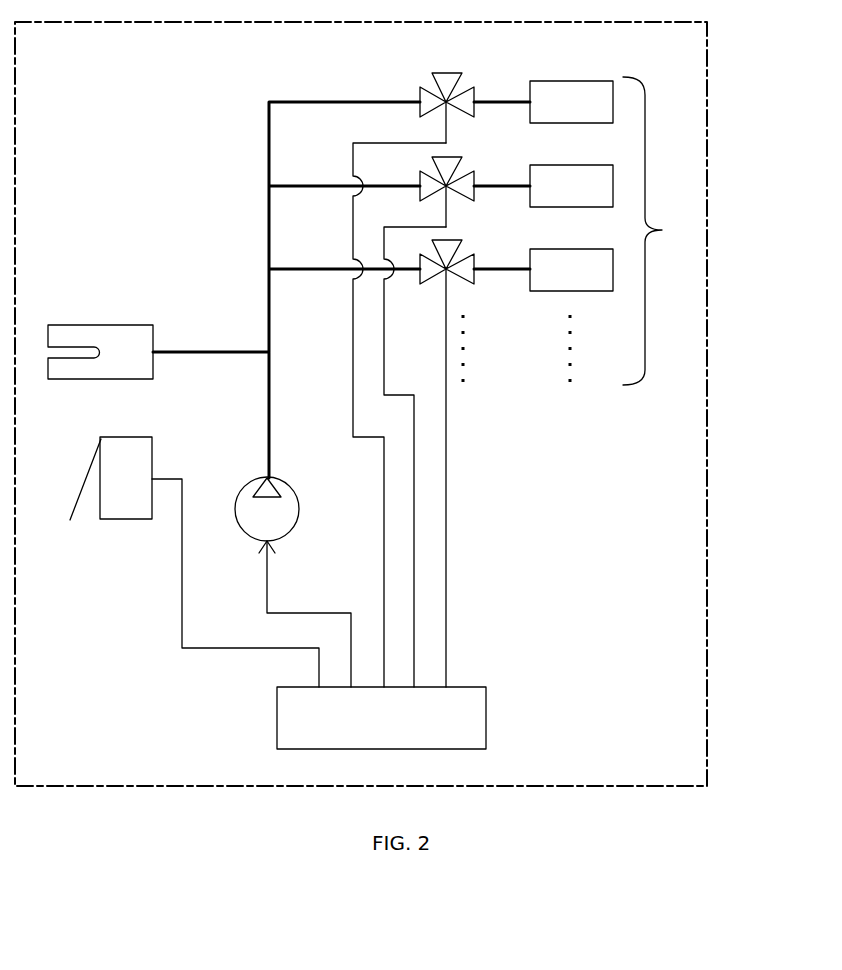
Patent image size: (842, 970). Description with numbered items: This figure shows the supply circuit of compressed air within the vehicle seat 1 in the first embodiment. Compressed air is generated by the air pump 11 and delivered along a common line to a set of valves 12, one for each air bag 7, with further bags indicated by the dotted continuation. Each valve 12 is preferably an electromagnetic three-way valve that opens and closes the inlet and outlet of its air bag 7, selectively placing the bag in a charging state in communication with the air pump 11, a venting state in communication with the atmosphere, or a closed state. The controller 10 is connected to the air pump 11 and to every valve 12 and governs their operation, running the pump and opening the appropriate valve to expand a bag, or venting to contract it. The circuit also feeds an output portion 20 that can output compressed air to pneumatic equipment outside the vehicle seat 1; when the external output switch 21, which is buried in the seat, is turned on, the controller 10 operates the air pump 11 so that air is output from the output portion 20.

The vehicle seat 1 is at (707, 82).
The air bag 7 is at (571, 231).
The controller 10 is at (478, 687).
The air pump 11 is at (297, 484).
The valve 12 is at (474, 93).
The output portion 20 is at (131, 325).
The external output switch 21 is at (152, 455).